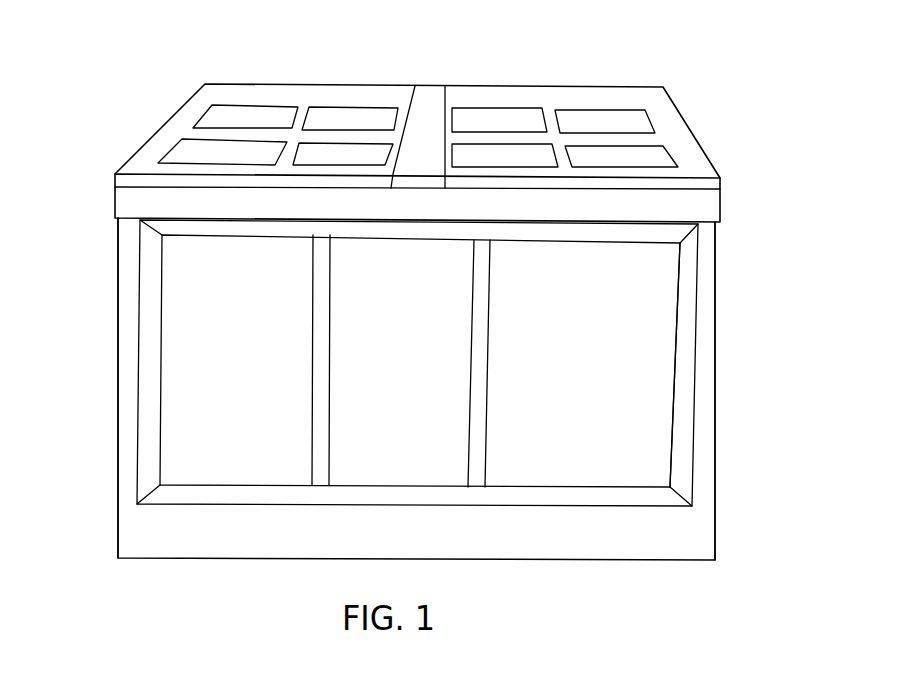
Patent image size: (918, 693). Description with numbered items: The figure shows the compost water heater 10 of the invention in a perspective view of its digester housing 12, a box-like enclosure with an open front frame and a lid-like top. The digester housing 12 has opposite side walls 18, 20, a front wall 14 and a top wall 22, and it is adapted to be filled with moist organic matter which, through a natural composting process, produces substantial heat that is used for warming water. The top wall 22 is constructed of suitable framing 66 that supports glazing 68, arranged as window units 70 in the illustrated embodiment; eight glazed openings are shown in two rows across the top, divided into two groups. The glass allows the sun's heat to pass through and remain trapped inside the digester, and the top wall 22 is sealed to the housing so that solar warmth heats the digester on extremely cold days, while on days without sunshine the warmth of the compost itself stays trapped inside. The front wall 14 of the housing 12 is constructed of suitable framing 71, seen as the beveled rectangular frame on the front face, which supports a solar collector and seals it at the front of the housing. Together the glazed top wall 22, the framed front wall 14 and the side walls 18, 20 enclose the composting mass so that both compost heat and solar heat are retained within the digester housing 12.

The compost water heater 10 is at (740, 88).
The digester housing 12 is at (718, 275).
The front wall 14 is at (703, 347).
The side wall 18 is at (715, 405).
The side wall 20 is at (117, 390).
The top wall 22 is at (542, 98).
The framing 66 is at (325, 97).
The glazing 68 is at (368, 118).
The window units 70 is at (262, 98).
The framing 71 is at (125, 440).